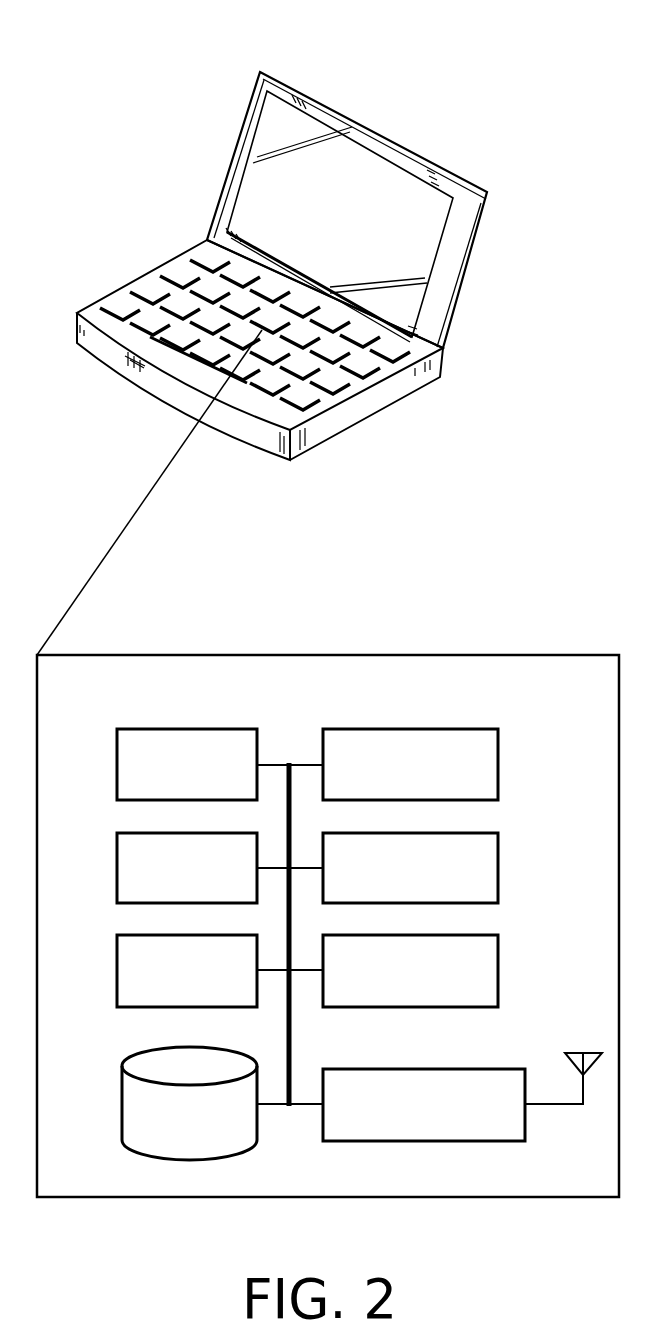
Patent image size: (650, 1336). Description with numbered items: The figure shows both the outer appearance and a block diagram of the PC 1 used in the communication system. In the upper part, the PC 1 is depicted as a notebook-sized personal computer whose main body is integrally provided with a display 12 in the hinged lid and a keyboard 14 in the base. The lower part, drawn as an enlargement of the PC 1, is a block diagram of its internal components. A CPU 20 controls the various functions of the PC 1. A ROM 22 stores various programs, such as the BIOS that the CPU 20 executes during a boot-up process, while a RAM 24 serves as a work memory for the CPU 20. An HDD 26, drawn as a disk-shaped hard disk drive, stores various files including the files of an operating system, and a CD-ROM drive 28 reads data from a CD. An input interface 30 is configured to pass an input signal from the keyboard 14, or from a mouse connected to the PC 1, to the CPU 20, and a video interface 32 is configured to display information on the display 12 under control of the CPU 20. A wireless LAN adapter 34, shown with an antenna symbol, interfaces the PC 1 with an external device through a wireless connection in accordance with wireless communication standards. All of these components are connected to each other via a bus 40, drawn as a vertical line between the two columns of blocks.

The PC 1 is at (422, 74).
The display 12 is at (275, 162).
The keyboard 14 is at (313, 407).
The CPU 20 is at (117, 767).
The ROM 22 is at (117, 868).
The RAM 24 is at (117, 970).
The HDD 26 is at (122, 1128).
The CD-ROM drive 28 is at (498, 765).
The input interface 30 is at (498, 868).
The video interface 32 is at (498, 970).
The wireless LAN adapter 34 is at (407, 1141).
The bus 40 is at (292, 783).